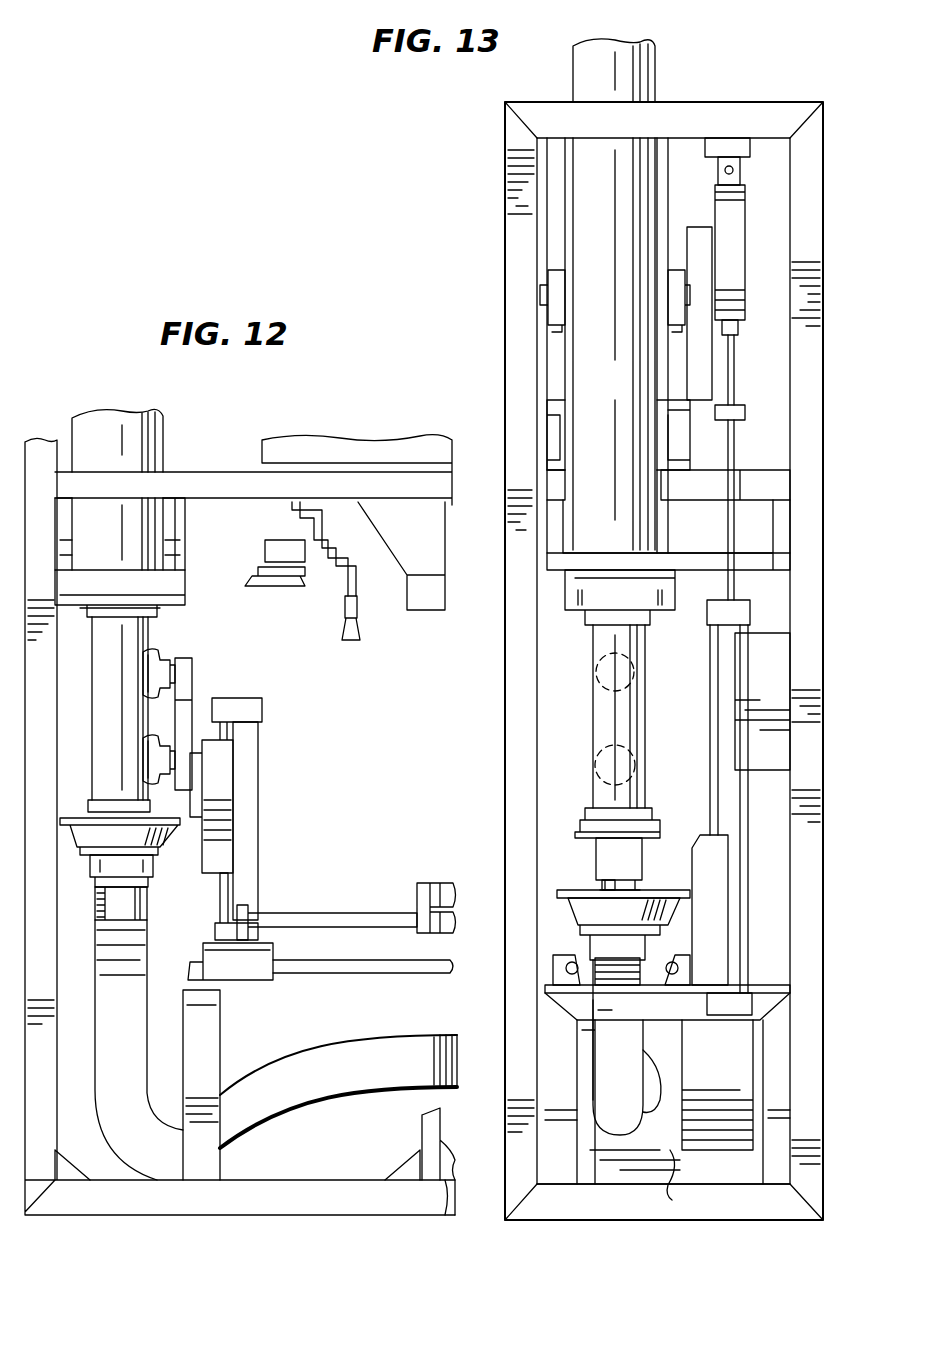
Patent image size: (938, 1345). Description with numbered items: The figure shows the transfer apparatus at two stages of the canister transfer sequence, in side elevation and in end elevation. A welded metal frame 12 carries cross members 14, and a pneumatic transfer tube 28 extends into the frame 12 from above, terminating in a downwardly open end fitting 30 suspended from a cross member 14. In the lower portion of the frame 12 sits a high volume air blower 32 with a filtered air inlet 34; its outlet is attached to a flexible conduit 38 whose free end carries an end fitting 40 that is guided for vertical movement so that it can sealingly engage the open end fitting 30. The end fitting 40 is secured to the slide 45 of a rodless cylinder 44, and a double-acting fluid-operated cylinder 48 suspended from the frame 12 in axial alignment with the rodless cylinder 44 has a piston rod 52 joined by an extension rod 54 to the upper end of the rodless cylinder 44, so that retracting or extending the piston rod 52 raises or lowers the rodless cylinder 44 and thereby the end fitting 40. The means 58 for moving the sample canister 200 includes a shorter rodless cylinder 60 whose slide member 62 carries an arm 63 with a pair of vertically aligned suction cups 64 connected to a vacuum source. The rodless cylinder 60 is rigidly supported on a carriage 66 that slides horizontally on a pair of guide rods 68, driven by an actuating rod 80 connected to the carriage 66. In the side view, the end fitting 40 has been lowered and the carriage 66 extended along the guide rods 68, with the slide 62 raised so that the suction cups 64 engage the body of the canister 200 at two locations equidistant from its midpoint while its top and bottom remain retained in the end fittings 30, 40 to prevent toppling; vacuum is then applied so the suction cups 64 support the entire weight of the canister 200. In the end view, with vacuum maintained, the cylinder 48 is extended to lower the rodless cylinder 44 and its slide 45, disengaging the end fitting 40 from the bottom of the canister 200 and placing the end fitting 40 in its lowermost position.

In FIG. 13, the frame 12 is at (823, 380).
In FIG. 13, the cross member 14 is at (678, 496).
In FIG. 13, the pneumatic transfer tube 28 is at (656, 72).
In FIG. 12, the pneumatic transfer tube 28 is at (162, 441).
In FIG. 13, the end fitting 30 is at (658, 604).
In FIG. 12, the end fitting 30 is at (165, 588).
In FIG. 13, the air blower 32 is at (663, 1182).
In FIG. 13, the filtered air inlet 34 is at (738, 1072).
In FIG. 13, the flexible conduit 38 is at (615, 1042).
In FIG. 12, the flexible conduit 38 is at (285, 1068).
In FIG. 13, the end fitting 40 is at (668, 920).
In FIG. 12, the end fitting 40 is at (162, 838).
In FIG. 13, the rodless cylinder 44 is at (742, 815).
In FIG. 12, the rodless cylinder 44 is at (150, 908).
In FIG. 13, the slide 45 is at (728, 877).
In FIG. 13, the fluid-operated cylinder 48 is at (745, 232).
In FIG. 13, the piston rod 52 is at (736, 372).
In FIG. 13, the extension rod 54 is at (736, 453).
In FIG. 12, the canister moving means 58 is at (274, 809).
In FIG. 13, the rodless cylinder 60 is at (600, 888).
In FIG. 12, the rodless cylinder 60 is at (250, 818).
In FIG. 13, the slide member 62 is at (626, 864).
In FIG. 12, the slide member 62 is at (236, 766).
In FIG. 12, the arm 63 is at (196, 668).
In FIG. 13, the suction cups 64 is at (592, 670).
In FIG. 12, the suction cups 64 is at (162, 660).
In FIG. 12, the carriage 66 is at (276, 950).
In FIG. 12, the guide rods 68 is at (393, 968).
In FIG. 12, the actuating rod 80 is at (346, 916).
In FIG. 13, the sample canister 200 is at (642, 722).
In FIG. 12, the sample canister 200 is at (186, 698).